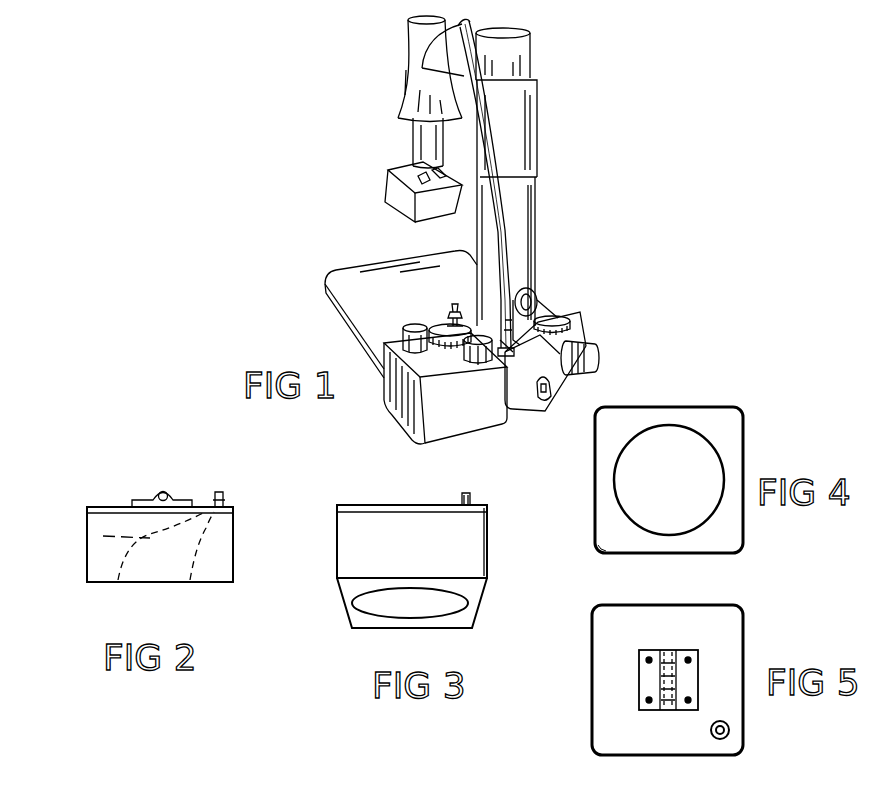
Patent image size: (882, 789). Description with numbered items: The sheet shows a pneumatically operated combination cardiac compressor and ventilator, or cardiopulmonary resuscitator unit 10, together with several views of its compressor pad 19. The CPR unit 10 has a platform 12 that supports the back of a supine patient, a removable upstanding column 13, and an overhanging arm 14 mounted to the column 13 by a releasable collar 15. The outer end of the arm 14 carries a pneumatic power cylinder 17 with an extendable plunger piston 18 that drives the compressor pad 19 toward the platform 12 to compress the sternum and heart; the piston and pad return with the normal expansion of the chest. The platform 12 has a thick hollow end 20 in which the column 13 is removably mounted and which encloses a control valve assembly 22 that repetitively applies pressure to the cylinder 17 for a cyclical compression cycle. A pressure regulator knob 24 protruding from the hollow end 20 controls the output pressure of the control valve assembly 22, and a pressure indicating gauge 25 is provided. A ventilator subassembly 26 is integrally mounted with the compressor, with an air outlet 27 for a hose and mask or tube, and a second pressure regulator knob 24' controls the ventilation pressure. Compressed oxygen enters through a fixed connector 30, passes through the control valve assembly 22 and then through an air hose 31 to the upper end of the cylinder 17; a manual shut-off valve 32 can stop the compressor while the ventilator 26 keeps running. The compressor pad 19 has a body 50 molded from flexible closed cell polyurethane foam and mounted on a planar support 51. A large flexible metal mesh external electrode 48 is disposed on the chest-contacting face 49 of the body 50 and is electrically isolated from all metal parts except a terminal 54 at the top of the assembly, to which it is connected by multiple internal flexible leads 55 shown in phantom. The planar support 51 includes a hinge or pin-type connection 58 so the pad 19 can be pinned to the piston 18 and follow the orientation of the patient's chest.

In FIG. 1, the cardiopulmonary resuscitator unit 10 is at (556, 170).
In FIG. 1, the platform 12 is at (378, 285).
In FIG. 1, the column 13 is at (518, 210).
In FIG. 1, the arm 14 is at (436, 62).
In FIG. 1, the releasable collar 15 is at (520, 118).
In FIG. 1, the pneumatic power cylinder 17 is at (404, 90).
In FIG. 1, the plunger piston 18 is at (424, 137).
In FIG. 1, the compressor pad 19 is at (372, 176).
In FIG. 2, the compressor pad 19 is at (82, 549).
In FIG. 3, the compressor pad 19 is at (402, 498).
In FIG. 4, the compressor pad 19 is at (749, 555).
In FIG. 5, the compressor pad 19 is at (748, 606).
In FIG. 1, the hollow end 20 is at (584, 322).
In FIG. 1, the control valve assembly 22 is at (543, 400).
In FIG. 1, the pressure regulator knob 24 is at (595, 366).
In FIG. 1, the pressure regulator knob 24' is at (358, 326).
In FIG. 1, the pressure indicating gauge 25 is at (444, 326).
In FIG. 1, the ventilator subassembly 26 is at (398, 403).
In FIG. 1, the air outlet 27 is at (478, 364).
In FIG. 1, the fixed connector 30 is at (454, 304).
In FIG. 1, the air hose 31 is at (492, 166).
In FIG. 1, the manual shut-off valve 32 is at (532, 300).
In FIG. 3, the external electrode 48 is at (422, 618).
In FIG. 4, the external electrode 48 is at (682, 493).
In FIG. 2, the face 49 is at (216, 583).
In FIG. 3, the face 49 is at (358, 620).
In FIG. 4, the face 49 is at (605, 535).
In FIG. 2, the body 50 is at (170, 572).
In FIG. 3, the body 50 is at (418, 554).
In FIG. 4, the body 50 is at (596, 468).
In FIG. 2, the planar support 51 is at (108, 505).
In FIG. 3, the planar support 51 is at (350, 505).
In FIG. 5, the planar support 51 is at (634, 639).
In FIG. 2, the terminal 54 is at (218, 489).
In FIG. 5, the terminal 54 is at (729, 738).
In FIG. 2, the internal flexible leads 55 is at (150, 533).
In FIG. 2, the hinge connection 58 is at (145, 500).
In FIG. 5, the hinge connection 58 is at (650, 683).